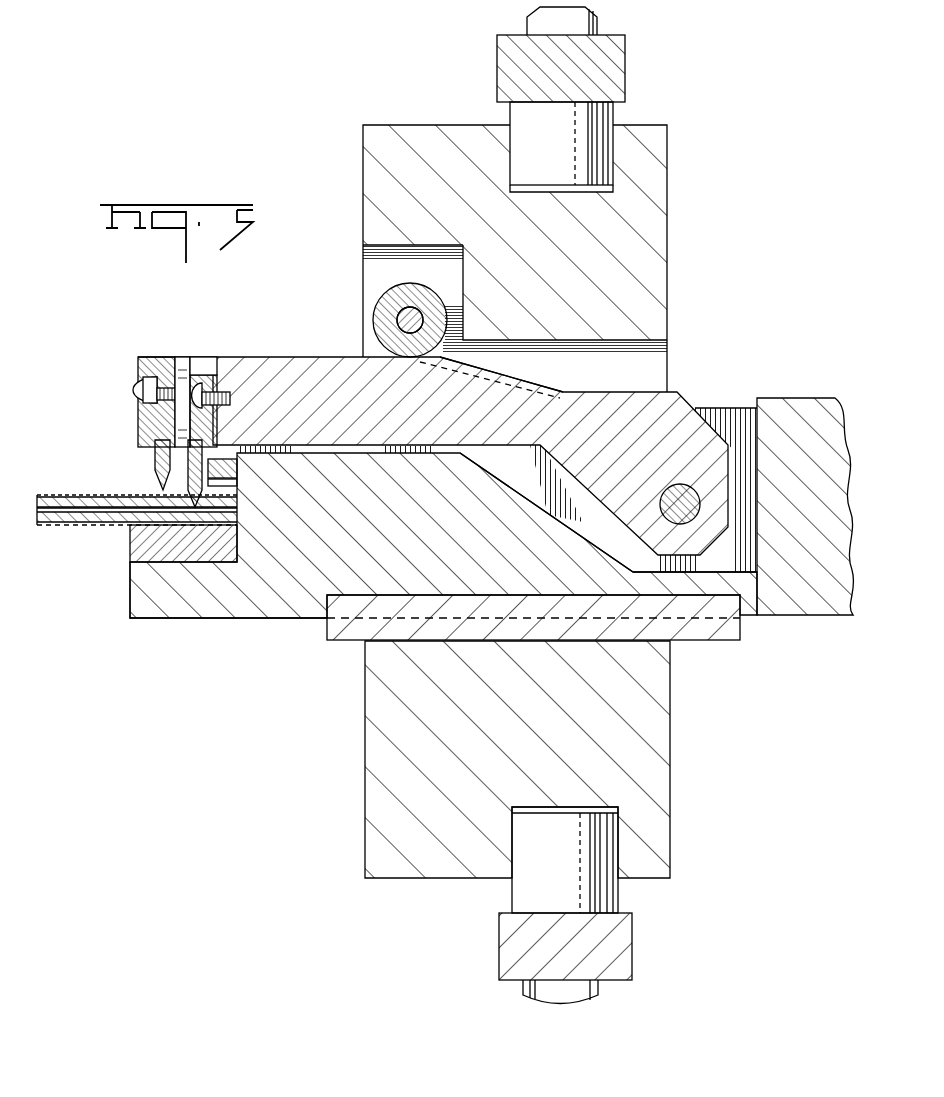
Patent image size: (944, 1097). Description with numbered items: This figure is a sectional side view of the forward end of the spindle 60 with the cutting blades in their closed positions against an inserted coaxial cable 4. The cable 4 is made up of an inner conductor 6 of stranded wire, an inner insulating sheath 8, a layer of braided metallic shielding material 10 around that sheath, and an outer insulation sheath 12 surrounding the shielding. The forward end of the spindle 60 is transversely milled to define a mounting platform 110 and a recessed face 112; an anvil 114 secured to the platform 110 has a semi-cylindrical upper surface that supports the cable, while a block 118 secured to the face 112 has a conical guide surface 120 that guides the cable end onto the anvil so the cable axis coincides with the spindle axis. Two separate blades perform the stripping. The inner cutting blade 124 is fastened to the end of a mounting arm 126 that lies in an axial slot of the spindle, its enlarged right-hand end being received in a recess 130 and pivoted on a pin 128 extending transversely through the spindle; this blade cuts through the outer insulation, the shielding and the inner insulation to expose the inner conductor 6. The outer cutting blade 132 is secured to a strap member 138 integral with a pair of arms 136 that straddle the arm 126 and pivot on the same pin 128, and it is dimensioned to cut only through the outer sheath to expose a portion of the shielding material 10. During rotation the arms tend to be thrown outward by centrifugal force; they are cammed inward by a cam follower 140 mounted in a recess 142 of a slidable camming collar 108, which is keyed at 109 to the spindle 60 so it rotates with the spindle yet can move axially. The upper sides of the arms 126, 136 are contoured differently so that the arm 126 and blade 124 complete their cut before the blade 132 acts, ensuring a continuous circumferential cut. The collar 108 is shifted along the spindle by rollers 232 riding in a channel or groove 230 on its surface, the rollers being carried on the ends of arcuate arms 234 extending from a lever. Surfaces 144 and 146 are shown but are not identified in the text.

The coaxial cable 4 is at (45, 525).
The inner conductor 6 is at (100, 520).
The inner insulating sheath 8 is at (72, 520).
The shielding material 10 is at (60, 497).
The outer insulation sheath 12 is at (43, 497).
The spindle 60 is at (305, 602).
The camming collar 108 is at (373, 130).
The key 109 is at (680, 635).
The mounting platform 110 is at (150, 548).
The recessed face 112 is at (210, 552).
The anvil 114 is at (183, 562).
The block 118 is at (235, 470).
The conical guide surface 120 is at (225, 488).
The cutting blade 124 is at (195, 468).
The mounting arm 126 is at (345, 372).
The pivot pin 128 is at (688, 510).
The recess 130 is at (546, 508).
The outer cutting blade 132 is at (160, 453).
The arms 136 is at (685, 395).
The strap member 138 is at (147, 362).
The cam follower 140 is at (375, 320).
The recess 142 is at (385, 271).
The cam surface 144 is at (540, 384).
The cam edge 146 is at (490, 365).
The channel or groove 230 is at (592, 167).
The rollers 232 is at (588, 120).
The arcuate arms 234 is at (612, 62).